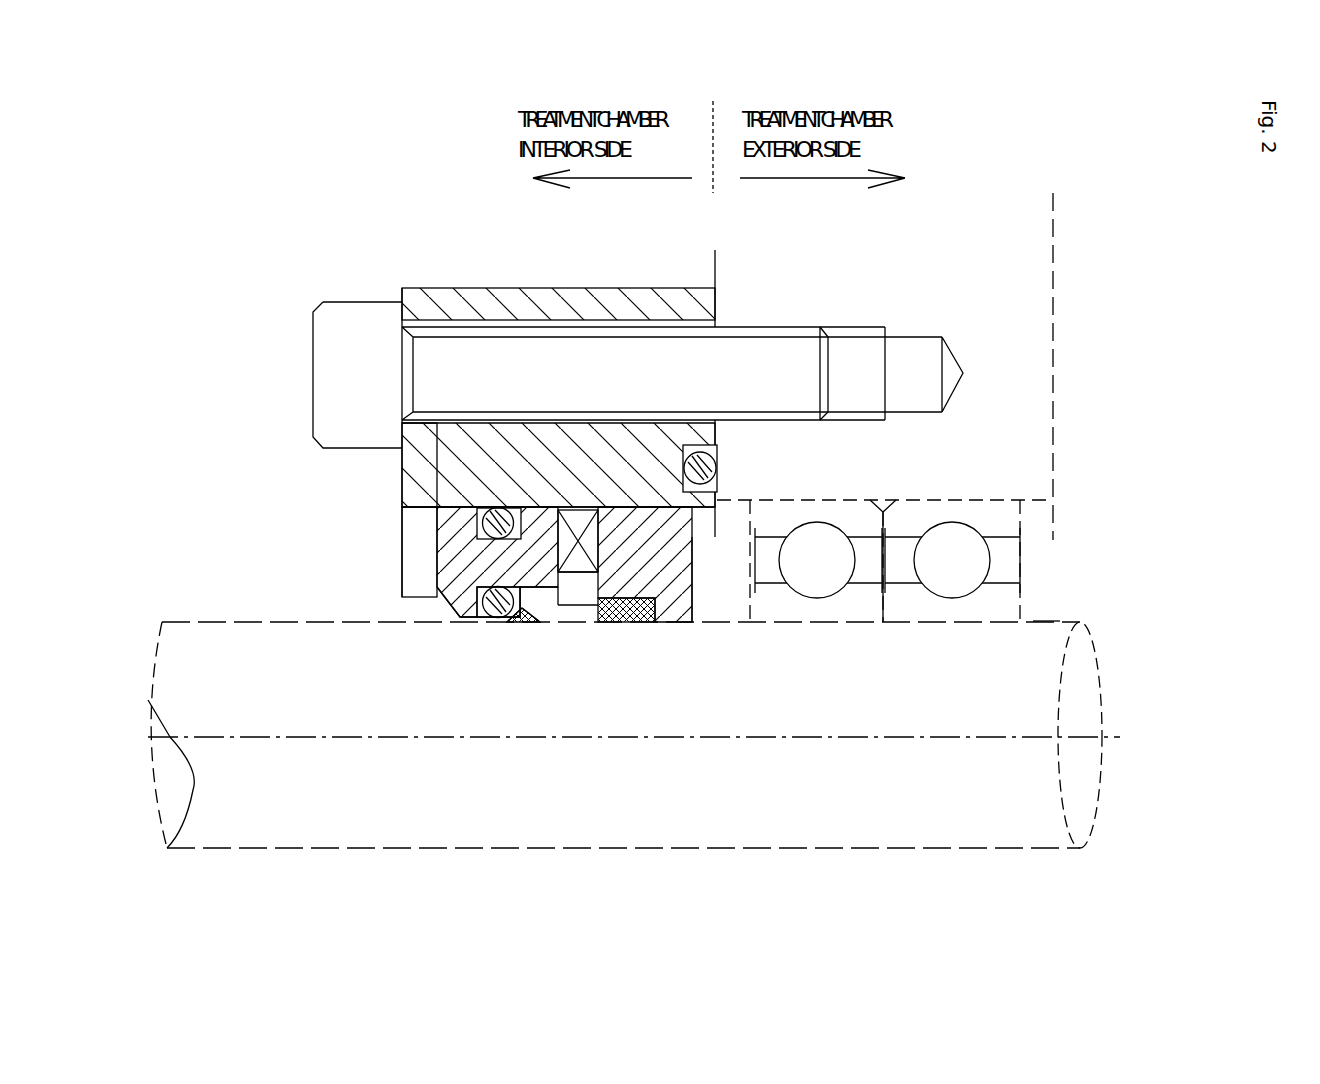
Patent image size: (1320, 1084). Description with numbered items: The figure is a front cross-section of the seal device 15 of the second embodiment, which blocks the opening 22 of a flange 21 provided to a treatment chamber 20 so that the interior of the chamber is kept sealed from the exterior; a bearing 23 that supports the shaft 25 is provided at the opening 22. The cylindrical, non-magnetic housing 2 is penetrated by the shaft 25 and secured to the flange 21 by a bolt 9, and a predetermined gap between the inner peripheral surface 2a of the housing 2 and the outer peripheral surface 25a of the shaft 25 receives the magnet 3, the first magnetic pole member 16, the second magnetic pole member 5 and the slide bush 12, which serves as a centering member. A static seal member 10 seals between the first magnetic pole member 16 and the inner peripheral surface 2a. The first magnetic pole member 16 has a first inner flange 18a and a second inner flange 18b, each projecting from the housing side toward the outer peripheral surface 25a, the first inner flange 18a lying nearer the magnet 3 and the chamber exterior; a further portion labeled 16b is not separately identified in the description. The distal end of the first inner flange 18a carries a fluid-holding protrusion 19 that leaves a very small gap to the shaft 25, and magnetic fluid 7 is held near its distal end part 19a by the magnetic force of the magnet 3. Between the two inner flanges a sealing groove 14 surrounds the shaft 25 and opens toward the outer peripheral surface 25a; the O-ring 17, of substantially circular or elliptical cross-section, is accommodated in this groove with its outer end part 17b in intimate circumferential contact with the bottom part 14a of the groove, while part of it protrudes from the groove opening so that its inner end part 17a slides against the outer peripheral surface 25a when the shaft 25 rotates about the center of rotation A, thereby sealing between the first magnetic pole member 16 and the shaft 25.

The seal device 15 is at (405, 203).
The housing 2 is at (418, 290).
The inner peripheral surface 2a is at (402, 512).
The bolt 9 is at (330, 348).
The flange portion 16b is at (437, 487).
The treatment chamber 20 is at (202, 423).
The second inner flange 18b is at (437, 570).
The first magnetic pole member 16 is at (437, 523).
The static seal member 10 is at (523, 508).
The magnet 3 is at (590, 512).
The end part on outer periphery of O-ring 17b is at (650, 555).
The slide bush 12 is at (647, 623).
The second magnetic pole member 5 is at (700, 607).
The sealing groove 14 is at (483, 625).
The bottom part of sealing groove 14a is at (402, 598).
The O-ring 17 is at (500, 625).
The end part on inner periphery of O-ring 17a is at (530, 625).
The distal end part of fluid-holding protrusion 19a is at (520, 625).
The fluid-holding protrusion 19 is at (556, 604).
The first inner flange 18a is at (568, 603).
The magnetic fluid 7 is at (535, 623).
The opening 22 is at (1033, 500).
The bearing 23 is at (997, 513).
The flange 21 is at (1030, 248).
The shaft 25 is at (1000, 695).
The outer peripheral surface of shaft 25a is at (1033, 621).
The center of rotation A is at (639, 735).